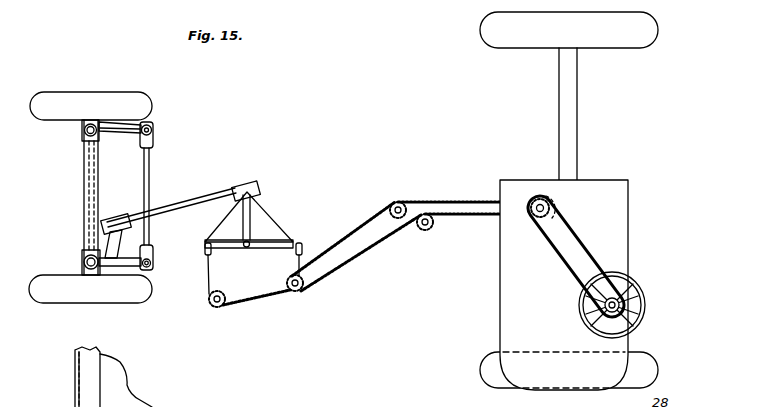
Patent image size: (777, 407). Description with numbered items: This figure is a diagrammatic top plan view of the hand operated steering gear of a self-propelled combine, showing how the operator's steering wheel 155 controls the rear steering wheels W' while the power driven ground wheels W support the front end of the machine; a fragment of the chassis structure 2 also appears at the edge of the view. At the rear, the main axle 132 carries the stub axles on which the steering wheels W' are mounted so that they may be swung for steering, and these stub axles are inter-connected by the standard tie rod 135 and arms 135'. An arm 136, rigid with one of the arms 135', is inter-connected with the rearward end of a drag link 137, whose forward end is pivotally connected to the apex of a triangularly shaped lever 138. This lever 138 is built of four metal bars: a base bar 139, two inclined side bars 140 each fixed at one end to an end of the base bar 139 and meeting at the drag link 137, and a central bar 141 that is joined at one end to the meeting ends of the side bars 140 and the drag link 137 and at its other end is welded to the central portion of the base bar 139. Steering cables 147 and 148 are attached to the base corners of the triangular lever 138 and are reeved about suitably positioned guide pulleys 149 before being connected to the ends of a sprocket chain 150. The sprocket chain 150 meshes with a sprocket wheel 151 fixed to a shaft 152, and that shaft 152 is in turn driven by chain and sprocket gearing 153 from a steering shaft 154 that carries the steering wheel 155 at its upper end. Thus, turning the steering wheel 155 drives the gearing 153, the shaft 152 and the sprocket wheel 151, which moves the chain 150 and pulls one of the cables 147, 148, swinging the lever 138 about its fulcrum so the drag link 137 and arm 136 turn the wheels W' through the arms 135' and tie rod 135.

The power driven ground wheels W is at (588, 199).
The steering wheels W' is at (105, 206).
The frame 2 is at (42, 406).
The rear main axle 132 is at (89, 194).
The tie rod 135 is at (144, 196).
The arms 135' is at (120, 150).
The arm 136 is at (122, 239).
The drag link 137 is at (192, 200).
The triangularly shaped lever 138 is at (280, 227).
The base bar 139 is at (268, 247).
The inclined side bars 140 is at (266, 215).
The central bar 141 is at (246, 228).
The steering cable 147 is at (335, 265).
The steering cable 148 is at (355, 229).
The guide pulleys 149 is at (293, 295).
The sprocket chain 150 is at (512, 200).
The sprocket wheel 151 is at (553, 216).
The shaft 152 is at (550, 200).
The chain and sprocket gearing 153 is at (566, 268).
The steering shaft 154 is at (621, 303).
The steering wheel 155 is at (645, 308).